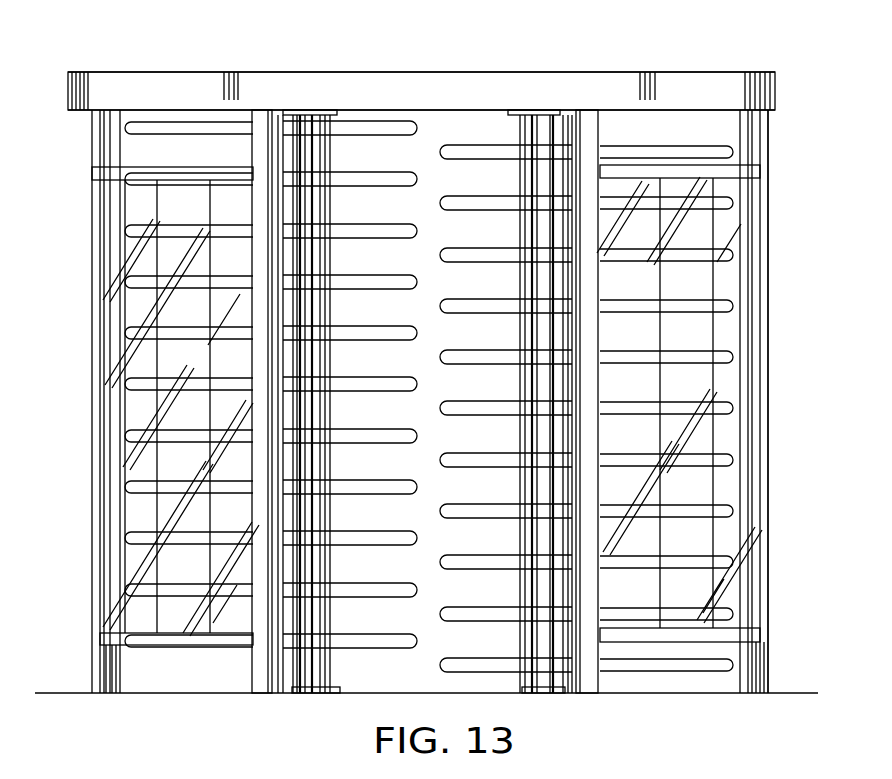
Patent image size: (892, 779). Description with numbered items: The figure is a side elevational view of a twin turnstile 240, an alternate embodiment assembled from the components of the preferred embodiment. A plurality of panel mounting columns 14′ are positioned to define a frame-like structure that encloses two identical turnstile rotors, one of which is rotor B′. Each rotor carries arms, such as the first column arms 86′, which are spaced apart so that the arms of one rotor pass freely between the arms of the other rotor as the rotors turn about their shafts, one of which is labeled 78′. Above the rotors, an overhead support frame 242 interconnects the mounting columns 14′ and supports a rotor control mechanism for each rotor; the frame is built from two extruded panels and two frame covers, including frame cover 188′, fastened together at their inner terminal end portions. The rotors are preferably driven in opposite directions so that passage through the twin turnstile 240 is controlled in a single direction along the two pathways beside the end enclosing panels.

The overhead support frame 242 is at (722, 66).
The frame cover 188′ is at (595, 80).
The panel mounting column 14′ is at (95, 473).
The first column arm 86′ is at (493, 198).
The left rotor shaft 78′ is at (305, 675).
The turnstile rotor B′ is at (520, 272).
The twin turnstile 240 is at (775, 460).